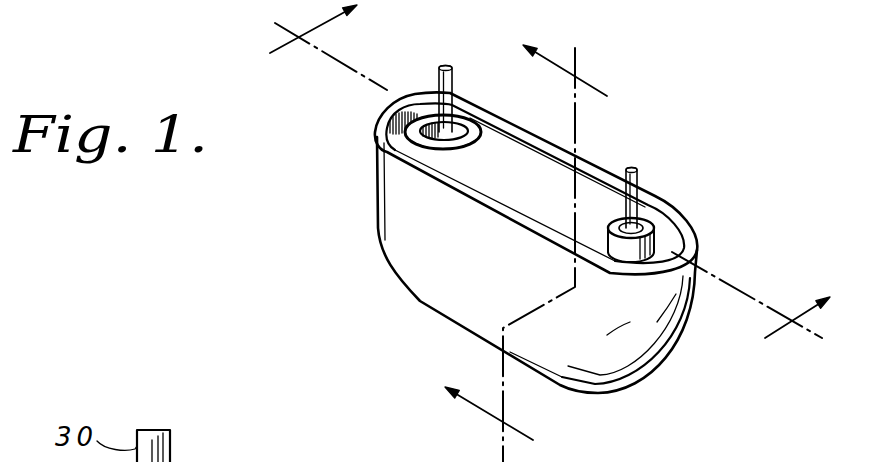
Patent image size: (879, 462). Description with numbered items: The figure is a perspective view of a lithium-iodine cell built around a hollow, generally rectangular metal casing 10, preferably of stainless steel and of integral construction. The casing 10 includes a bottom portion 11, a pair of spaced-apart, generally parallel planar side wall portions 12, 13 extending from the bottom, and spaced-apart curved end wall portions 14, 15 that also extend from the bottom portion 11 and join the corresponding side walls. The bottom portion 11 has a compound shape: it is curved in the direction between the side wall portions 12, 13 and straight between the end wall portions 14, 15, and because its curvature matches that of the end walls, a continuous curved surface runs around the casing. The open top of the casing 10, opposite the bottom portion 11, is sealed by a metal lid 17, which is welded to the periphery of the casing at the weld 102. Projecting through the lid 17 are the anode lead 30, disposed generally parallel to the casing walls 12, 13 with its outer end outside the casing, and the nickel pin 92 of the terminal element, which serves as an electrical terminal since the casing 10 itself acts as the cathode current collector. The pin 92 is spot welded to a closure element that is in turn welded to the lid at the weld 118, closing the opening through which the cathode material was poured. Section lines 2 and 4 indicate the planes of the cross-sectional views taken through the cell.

The section line 2- 2 is at (526, 252).
The section line 4- 4 is at (536, 186).
The casing 10 is at (714, 158).
The bottom portion 11 is at (460, 330).
The side wall portion 12 is at (397, 247).
The side wall portion 13 is at (550, 136).
The end wall portion 14 is at (379, 104).
The end wall portion 15 is at (673, 323).
The lid 17 is at (507, 173).
The lead 30 is at (637, 178).
The pin portion 92 is at (437, 76).
The weld 102 is at (593, 170).
The weld 118 is at (413, 112).